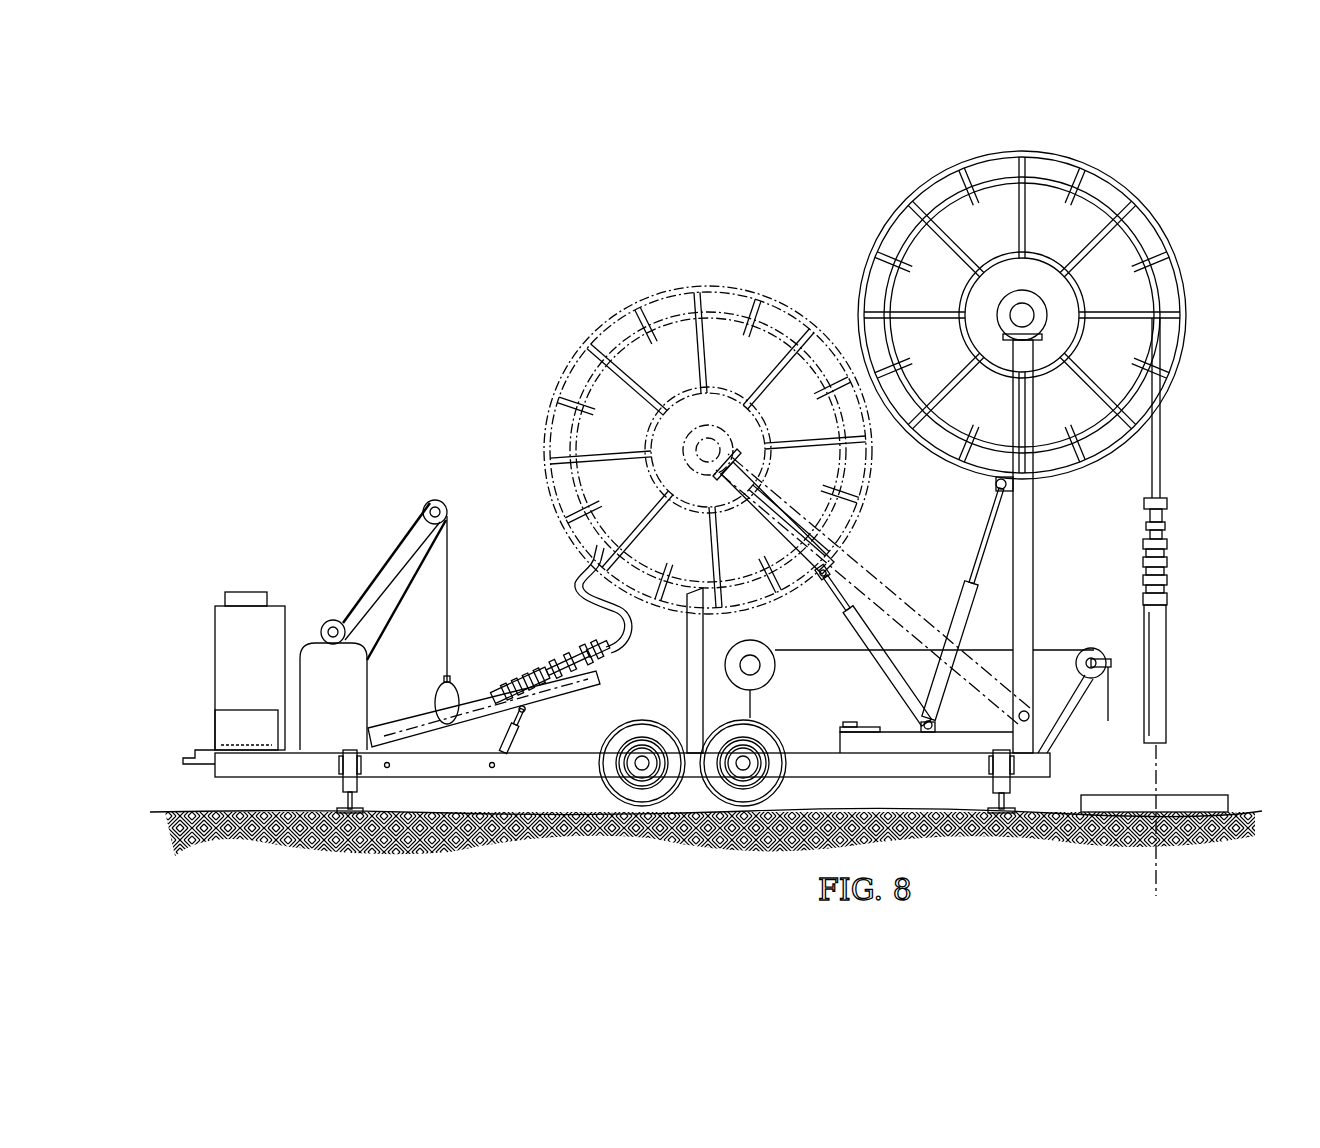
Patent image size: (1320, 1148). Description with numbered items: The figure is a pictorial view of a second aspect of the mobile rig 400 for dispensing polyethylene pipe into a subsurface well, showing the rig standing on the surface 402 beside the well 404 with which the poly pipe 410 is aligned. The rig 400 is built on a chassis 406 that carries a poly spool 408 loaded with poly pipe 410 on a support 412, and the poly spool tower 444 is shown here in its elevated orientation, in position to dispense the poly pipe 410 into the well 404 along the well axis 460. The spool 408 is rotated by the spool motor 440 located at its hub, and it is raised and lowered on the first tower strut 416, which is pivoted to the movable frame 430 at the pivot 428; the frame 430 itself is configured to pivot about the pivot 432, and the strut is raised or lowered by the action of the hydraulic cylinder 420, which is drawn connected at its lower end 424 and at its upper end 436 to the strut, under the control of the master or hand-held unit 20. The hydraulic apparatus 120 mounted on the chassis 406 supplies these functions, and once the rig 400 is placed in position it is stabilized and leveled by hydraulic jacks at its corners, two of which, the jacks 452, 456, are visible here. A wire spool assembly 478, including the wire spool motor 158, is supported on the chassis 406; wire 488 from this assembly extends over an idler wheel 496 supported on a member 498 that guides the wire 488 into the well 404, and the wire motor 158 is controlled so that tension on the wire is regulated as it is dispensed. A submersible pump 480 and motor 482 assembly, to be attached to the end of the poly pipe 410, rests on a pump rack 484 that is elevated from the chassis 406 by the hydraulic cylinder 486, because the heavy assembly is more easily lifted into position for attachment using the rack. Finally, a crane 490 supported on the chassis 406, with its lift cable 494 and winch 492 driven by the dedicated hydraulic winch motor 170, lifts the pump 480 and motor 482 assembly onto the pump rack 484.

The master control unit 20 is at (225, 598).
The hydraulic apparatus 120 is at (215, 654).
The wire spool motor 158 is at (733, 658).
The hydraulic winch motor 170 is at (333, 620).
The rig 400 is at (450, 298).
The surface 402 is at (595, 852).
The well 404 is at (1205, 798).
The chassis 406 is at (239, 770).
The poly spool 408 is at (1022, 295).
The poly pipe 410 is at (578, 565).
The support 412 is at (687, 690).
The first tower strut 416 is at (1033, 540).
The hydraulic cylinder 420 is at (960, 598).
The cylinder pivot bracket 424 is at (920, 724).
The pivot 428 is at (1030, 722).
The movable frame 430 is at (900, 745).
The pivot 432 is at (843, 727).
The upper cylinder pivot 436 is at (996, 485).
The spool motor 440 is at (1022, 310).
The poly spool tower 444 is at (1094, 486).
The hydraulic jack 452 is at (346, 790).
The hydraulic jack 456 is at (993, 790).
The well axis 460 is at (1160, 878).
The wire spool assembly 478 is at (770, 641).
The submersible pump 480 is at (537, 665).
The motor 482 is at (413, 710).
The pump rack 484 is at (558, 695).
The hydraulic cylinder 486 is at (495, 742).
The wire 488 is at (1110, 722).
The crane 490 is at (410, 553).
The winch 492 is at (323, 626).
The lift cable 494 is at (450, 560).
The idler wheel 496 is at (1090, 650).
The member 498 is at (1116, 658).